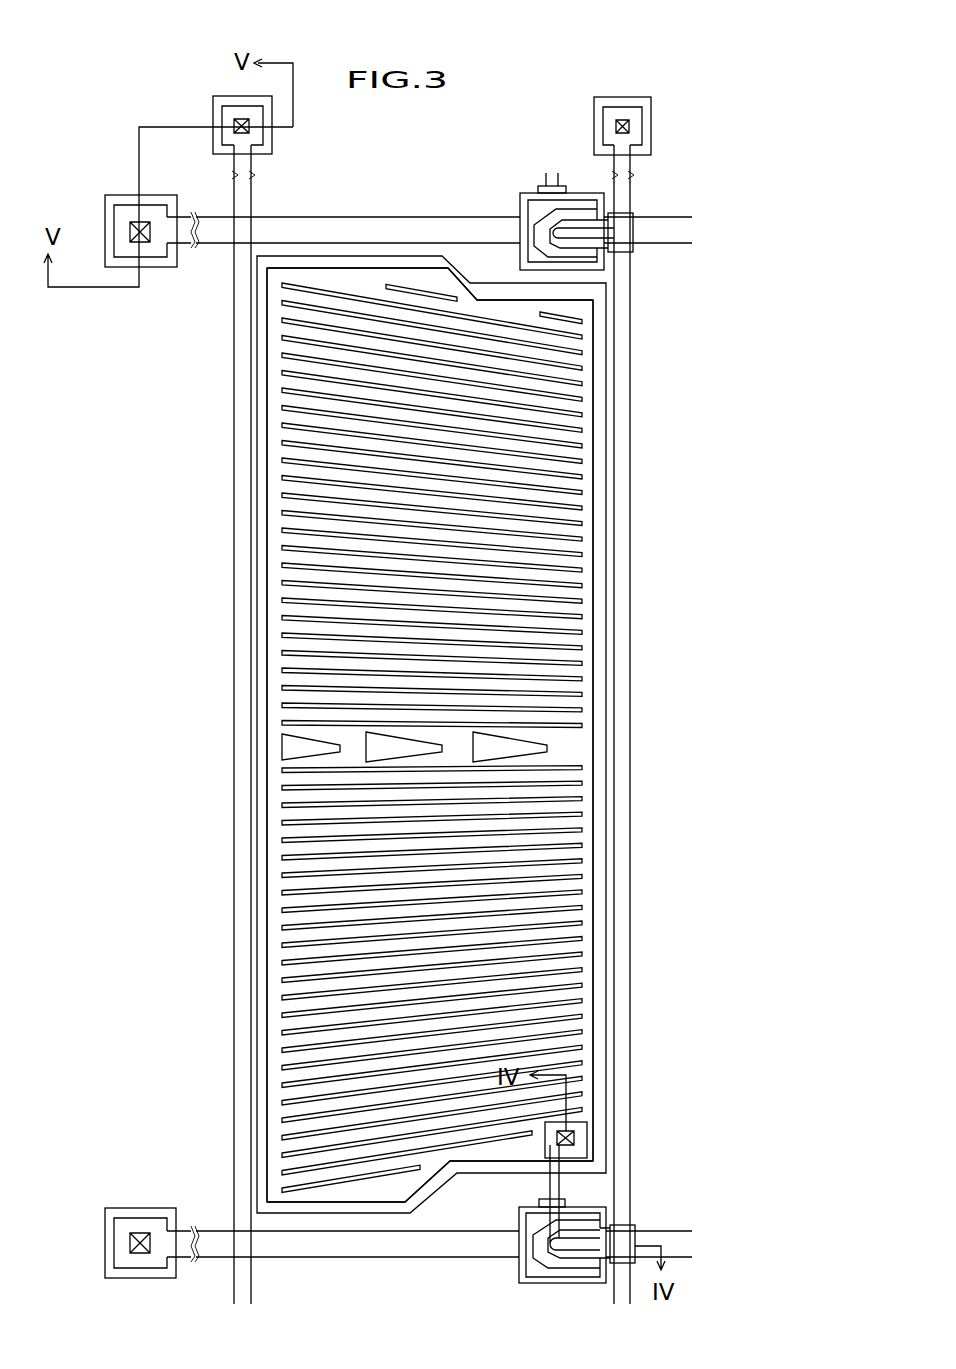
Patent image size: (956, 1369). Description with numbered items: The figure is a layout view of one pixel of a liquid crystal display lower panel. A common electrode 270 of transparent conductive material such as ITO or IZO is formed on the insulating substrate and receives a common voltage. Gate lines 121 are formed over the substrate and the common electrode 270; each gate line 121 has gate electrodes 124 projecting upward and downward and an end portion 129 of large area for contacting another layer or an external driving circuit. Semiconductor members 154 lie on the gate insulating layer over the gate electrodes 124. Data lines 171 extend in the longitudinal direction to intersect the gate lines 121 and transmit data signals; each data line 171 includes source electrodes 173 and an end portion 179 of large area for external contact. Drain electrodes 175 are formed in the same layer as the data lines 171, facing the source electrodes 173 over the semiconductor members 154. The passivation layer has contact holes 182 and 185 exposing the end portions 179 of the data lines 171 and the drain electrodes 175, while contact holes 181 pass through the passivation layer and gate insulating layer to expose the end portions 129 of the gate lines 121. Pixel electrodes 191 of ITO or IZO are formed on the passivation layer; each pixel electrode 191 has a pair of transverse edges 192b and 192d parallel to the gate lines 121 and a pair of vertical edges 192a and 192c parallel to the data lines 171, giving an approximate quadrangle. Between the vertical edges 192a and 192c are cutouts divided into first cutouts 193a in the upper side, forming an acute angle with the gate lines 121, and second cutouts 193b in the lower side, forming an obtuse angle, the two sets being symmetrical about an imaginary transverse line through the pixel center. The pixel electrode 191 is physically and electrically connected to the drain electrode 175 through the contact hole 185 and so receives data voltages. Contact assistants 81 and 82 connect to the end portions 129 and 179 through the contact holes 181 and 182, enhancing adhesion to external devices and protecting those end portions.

The contact assistant 81 is at (117, 195).
The contact assistant 82 is at (272, 150).
The gate line 121 is at (343, 1233).
The gate electrode 124 is at (519, 1222).
The end portion of gate line 129 is at (152, 205).
The semiconductor member 154 is at (540, 1283).
The data line 171 is at (615, 1050).
The source electrode 173 is at (572, 1258).
The drain electrode 175 is at (578, 1210).
The end portion of data line 179 is at (265, 133).
The contact hole 181 is at (152, 232).
The contact hole 182 is at (237, 118).
The contact hole 185 is at (575, 1137).
The pixel electrode 191 is at (606, 902).
The vertical edge 192a is at (595, 437).
The transverse edge 192b is at (388, 262).
The vertical edge 192c is at (266, 500).
The transverse edge 192d is at (388, 1203).
The first cutouts 193a is at (545, 512).
The second cutouts 193b is at (537, 1002).
The common electrode 270 is at (258, 905).